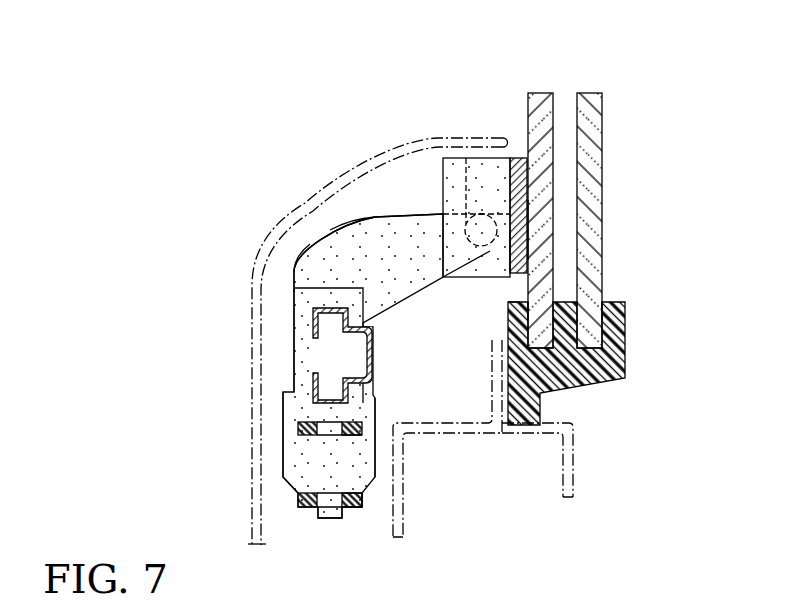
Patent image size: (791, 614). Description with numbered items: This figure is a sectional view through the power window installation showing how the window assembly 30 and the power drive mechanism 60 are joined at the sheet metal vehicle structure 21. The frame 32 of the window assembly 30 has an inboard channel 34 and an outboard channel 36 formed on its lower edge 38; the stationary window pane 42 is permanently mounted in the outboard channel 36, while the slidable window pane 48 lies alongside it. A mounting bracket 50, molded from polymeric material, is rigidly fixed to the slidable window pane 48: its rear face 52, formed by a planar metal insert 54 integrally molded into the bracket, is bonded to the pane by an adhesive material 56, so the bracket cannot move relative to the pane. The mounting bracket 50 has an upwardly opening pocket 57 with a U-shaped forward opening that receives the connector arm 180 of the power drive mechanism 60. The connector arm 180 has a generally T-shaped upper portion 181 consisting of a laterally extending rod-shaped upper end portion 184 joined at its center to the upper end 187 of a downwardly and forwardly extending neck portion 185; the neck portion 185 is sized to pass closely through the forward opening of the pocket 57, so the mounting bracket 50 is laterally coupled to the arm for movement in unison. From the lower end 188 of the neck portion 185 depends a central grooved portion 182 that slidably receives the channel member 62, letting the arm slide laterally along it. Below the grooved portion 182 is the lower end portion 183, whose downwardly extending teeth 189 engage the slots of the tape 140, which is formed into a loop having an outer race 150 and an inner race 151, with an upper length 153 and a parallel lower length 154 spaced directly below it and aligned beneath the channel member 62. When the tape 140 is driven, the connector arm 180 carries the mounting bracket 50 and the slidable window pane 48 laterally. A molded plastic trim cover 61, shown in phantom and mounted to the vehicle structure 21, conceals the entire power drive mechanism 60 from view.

The sheet metal vehicle structure 21 is at (471, 437).
The window assembly 30 is at (568, 219).
The frame 32 is at (587, 367).
The inboard channel 34 is at (534, 303).
The outboard channel 36 is at (606, 300).
The lower edge 38 is at (521, 300).
The second stationary window pane 42 is at (590, 107).
The second slidable window pane 48 is at (542, 107).
The mounting bracket 50 is at (456, 157).
The rear face 52 is at (516, 168).
The planar metal insert 54 is at (517, 257).
The adhesive material 56 is at (527, 226).
The upwardly opening pocket 57 is at (466, 158).
The power drive mechanism 60 is at (271, 342).
The trim cover 61 is at (340, 188).
The channel member 62 is at (373, 347).
The tape 140 is at (353, 440).
The outer race 150 is at (305, 414).
The inner race 151 is at (290, 486).
The upper length 153 is at (355, 421).
The lower length 154 is at (347, 511).
The connector arm 180 is at (307, 238).
The T-shaped upper portion 181 is at (375, 213).
The central grooved portion 182 is at (302, 357).
The lower end portion 183 is at (297, 488).
The rod-shaped upper end portion 184 is at (490, 251).
The neck portion 185 is at (343, 242).
The upper end 187 is at (410, 225).
The lower end 188 is at (312, 276).
The teeth 189 is at (327, 517).